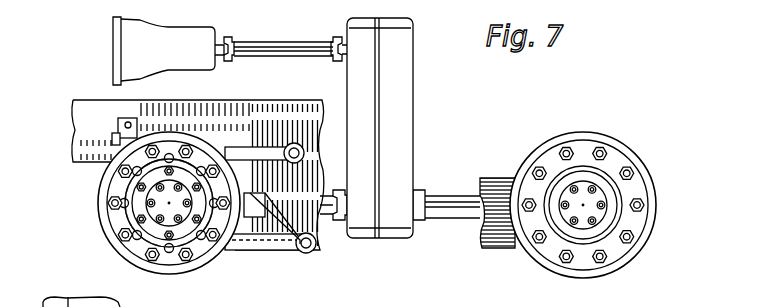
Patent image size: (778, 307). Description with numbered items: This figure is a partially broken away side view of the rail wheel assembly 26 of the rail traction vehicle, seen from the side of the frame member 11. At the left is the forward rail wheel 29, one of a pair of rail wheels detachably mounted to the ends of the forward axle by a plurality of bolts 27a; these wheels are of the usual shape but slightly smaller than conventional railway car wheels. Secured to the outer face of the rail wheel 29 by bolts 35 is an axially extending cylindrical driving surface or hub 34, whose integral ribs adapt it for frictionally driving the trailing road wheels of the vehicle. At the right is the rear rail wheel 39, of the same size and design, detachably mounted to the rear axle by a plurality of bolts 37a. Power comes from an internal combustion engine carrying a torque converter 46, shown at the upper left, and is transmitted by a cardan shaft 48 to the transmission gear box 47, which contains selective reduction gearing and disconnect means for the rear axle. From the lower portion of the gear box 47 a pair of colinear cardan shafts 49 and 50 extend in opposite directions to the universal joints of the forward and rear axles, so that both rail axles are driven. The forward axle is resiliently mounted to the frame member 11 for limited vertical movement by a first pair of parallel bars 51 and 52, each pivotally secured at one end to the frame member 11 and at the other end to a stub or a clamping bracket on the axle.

The frame member 11 is at (494, 246).
The rail wheel assembly 26 is at (270, 271).
The bolts 27a is at (182, 146).
The rail wheel 29 is at (158, 266).
The hub 34 is at (124, 212).
The bolts 35 is at (134, 190).
The bolts 37a is at (537, 171).
The rail wheel 39 is at (587, 148).
The torque converter 46 is at (172, 34).
The transmission gear box 47 is at (397, 128).
The cardan shaft 48 is at (259, 44).
The cardan shaft 49 is at (262, 197).
The cardan shaft 50 is at (452, 221).
The parallel bar 51 is at (249, 148).
The parallel bar 52 is at (240, 251).